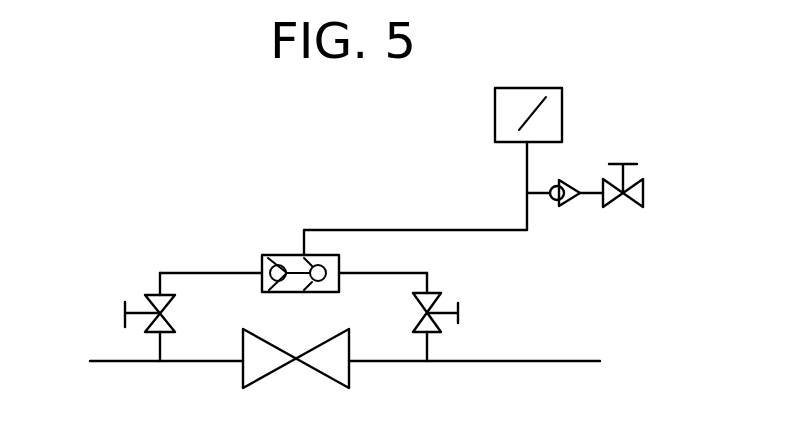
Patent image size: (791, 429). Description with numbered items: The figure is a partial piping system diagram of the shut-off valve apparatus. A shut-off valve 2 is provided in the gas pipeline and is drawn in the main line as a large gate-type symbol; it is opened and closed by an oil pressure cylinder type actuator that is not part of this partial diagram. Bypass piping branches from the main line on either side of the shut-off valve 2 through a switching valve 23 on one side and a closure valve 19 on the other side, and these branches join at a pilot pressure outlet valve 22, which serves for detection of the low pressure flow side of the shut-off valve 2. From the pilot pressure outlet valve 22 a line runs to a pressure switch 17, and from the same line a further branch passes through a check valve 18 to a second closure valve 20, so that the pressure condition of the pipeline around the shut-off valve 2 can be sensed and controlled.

The shut-off valve 2 is at (317, 372).
The pressure switch 17 is at (565, 114).
The check valve 18 is at (563, 207).
The closure valve 19 is at (463, 311).
The closure valve 20 is at (608, 207).
The pilot pressure outlet valve 22 is at (285, 255).
The switching valve 23 is at (124, 303).